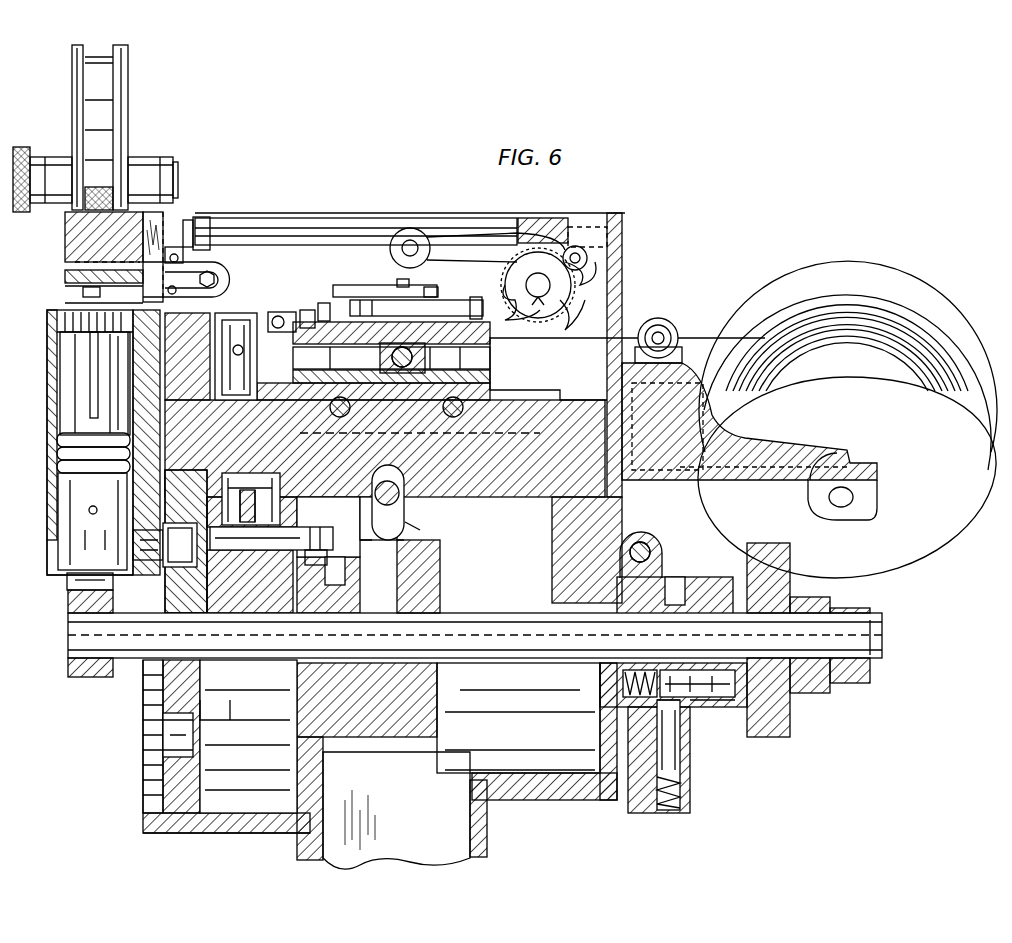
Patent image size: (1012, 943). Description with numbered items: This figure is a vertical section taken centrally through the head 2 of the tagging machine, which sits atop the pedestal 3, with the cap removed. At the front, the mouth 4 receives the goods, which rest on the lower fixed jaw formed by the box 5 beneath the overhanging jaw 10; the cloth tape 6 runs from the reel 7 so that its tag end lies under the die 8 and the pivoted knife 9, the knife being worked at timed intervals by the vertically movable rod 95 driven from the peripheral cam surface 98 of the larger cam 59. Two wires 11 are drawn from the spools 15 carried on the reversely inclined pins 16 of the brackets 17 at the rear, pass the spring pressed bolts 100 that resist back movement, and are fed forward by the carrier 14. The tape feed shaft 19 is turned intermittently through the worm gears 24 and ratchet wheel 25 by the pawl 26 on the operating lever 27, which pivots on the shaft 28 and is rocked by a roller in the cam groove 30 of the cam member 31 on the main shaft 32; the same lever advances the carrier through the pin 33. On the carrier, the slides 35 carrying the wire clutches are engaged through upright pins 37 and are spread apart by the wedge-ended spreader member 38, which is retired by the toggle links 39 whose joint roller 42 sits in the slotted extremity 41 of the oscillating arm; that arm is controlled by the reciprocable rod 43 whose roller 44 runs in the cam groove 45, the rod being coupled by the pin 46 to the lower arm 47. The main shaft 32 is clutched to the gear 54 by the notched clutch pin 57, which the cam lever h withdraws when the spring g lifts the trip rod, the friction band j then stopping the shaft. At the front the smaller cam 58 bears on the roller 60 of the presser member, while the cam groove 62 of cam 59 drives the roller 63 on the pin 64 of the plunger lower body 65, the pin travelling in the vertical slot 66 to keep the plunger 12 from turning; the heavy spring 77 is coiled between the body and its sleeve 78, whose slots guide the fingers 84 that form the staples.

The head 2 is at (625, 218).
The pedestal 3 is at (480, 831).
The mouth 4 is at (70, 303).
The box 5 is at (47, 376).
The cloth tape 6 is at (85, 293).
The reel 7 is at (120, 95).
The die 8 is at (65, 275).
The pivoted knife 9 is at (186, 279).
The overhanging jaw 10 is at (65, 238).
The wire 11 is at (545, 340).
The plunger 12 is at (65, 410).
The carrier 14 is at (490, 340).
The spool 15 is at (845, 269).
The reversely-inclined pin 16 is at (853, 497).
The bracket 17 is at (765, 478).
The horizontal shaft 19 is at (372, 230).
The worm gears 24 is at (550, 218).
The ratchet wheel 25 is at (575, 292).
The pawl 26 is at (455, 240).
The operating lever 27 is at (420, 279).
The shaft 28 is at (410, 497).
The cam groove 30 is at (380, 560).
The cam member 31 is at (440, 585).
The main shaft 32 is at (495, 622).
The pin 33 is at (391, 363).
The slide 35 is at (287, 310).
The upright pin 37 is at (312, 310).
The spreader member 38 is at (346, 305).
The toggle links 39 is at (385, 285).
The slotted extremity 41 is at (360, 285).
The roller 42 is at (432, 290).
The reciprocable rod 43 is at (300, 535).
The roller 44 is at (330, 552).
The cam groove 45 is at (318, 705).
The pin 46 is at (250, 487).
The lower arm 47 is at (255, 516).
The gear 54 is at (790, 730).
The clutch pin 57 is at (718, 707).
The cam 58 is at (97, 677).
The cam 59 is at (163, 768).
The roller 60 is at (90, 582).
The cam groove 62 is at (165, 735).
The roller 63 is at (165, 562).
The pin 64 is at (145, 538).
The lower body 65 is at (57, 555).
The vertical slot 66 is at (147, 490).
The heavy spring 77 is at (60, 458).
The sleeve 78 is at (48, 432).
The fingers 84 is at (92, 350).
The vertically-movable rod 95 is at (176, 247).
The peripheral cam surface 98 is at (187, 825).
The spring pressed bolt 100 is at (670, 330).
The friction band j is at (662, 562).
The cam lever h is at (690, 706).
The spring g is at (690, 786).